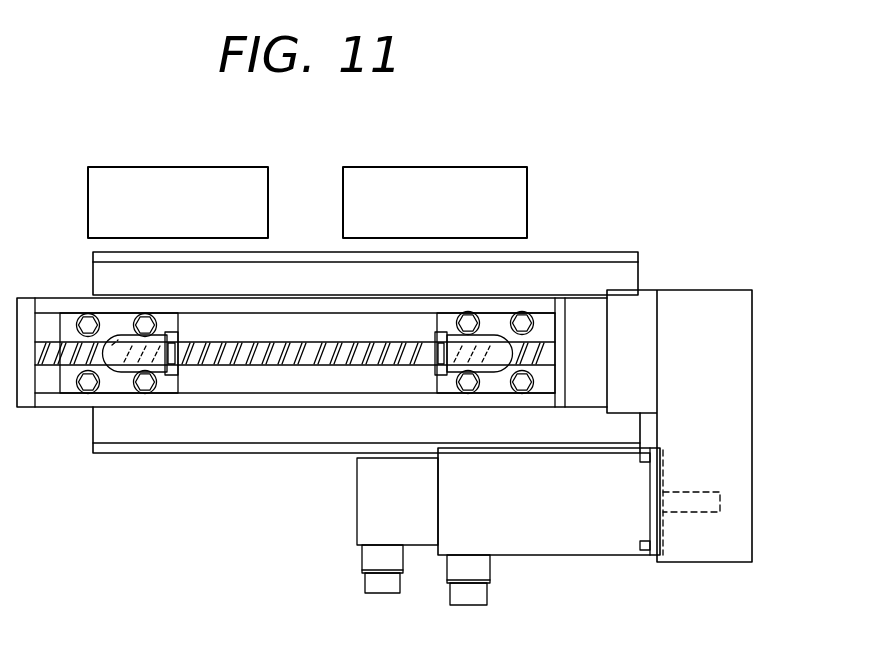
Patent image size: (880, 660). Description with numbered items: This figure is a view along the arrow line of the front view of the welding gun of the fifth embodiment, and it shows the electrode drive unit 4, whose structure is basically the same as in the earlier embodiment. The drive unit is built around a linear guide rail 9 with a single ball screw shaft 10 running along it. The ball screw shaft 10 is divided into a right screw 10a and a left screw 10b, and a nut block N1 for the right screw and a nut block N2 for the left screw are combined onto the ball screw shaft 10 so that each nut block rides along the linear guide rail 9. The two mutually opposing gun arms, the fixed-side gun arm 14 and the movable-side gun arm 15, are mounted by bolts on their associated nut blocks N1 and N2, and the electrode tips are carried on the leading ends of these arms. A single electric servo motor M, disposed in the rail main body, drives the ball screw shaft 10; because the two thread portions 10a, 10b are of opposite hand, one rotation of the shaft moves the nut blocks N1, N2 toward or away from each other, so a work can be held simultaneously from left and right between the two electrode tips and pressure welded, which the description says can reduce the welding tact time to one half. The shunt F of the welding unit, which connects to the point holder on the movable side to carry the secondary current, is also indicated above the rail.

The shunt F is at (216, 172).
The nut block for a right screw N1 is at (73, 317).
The nut block for a left screw N2 is at (498, 320).
The movable-side gun arm 15 is at (538, 343).
The drive unit 4 is at (730, 362).
The fixed-side gun arm 14 is at (127, 358).
The linear guide rail 9 is at (145, 404).
The ball screw shaft 10 is at (306, 512).
The right screw 10a is at (258, 366).
The left screw 10b is at (333, 358).
The servo motor M is at (573, 528).